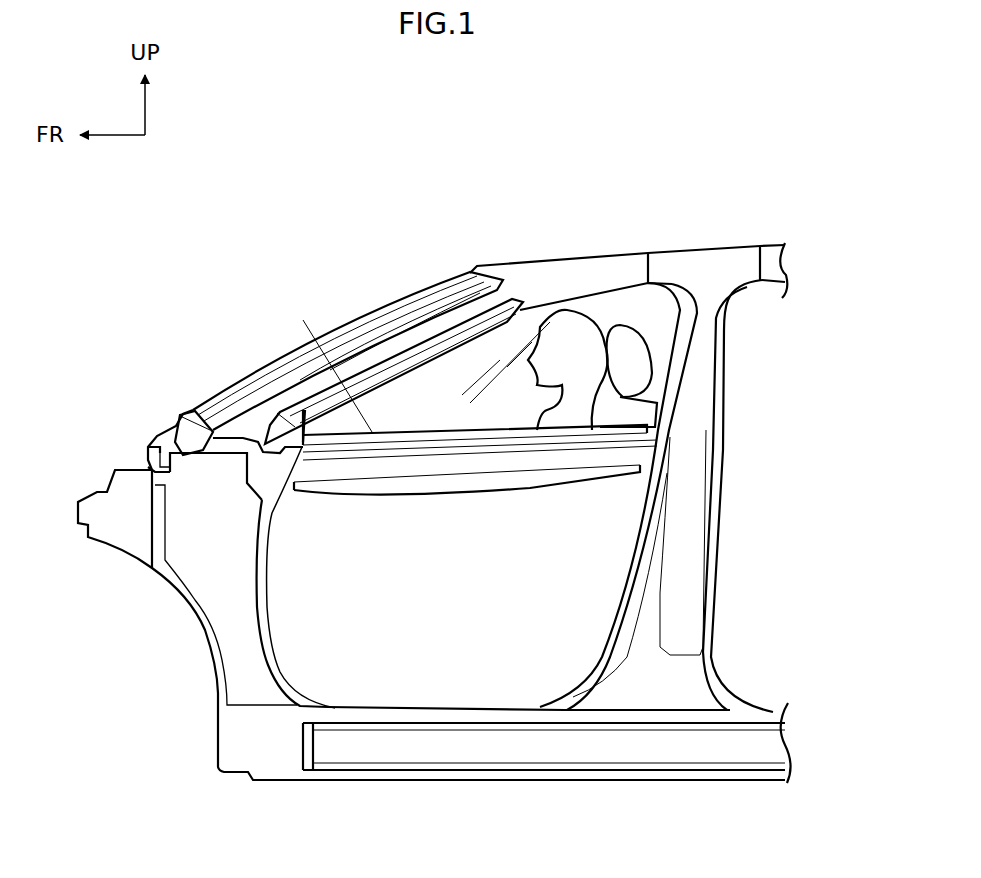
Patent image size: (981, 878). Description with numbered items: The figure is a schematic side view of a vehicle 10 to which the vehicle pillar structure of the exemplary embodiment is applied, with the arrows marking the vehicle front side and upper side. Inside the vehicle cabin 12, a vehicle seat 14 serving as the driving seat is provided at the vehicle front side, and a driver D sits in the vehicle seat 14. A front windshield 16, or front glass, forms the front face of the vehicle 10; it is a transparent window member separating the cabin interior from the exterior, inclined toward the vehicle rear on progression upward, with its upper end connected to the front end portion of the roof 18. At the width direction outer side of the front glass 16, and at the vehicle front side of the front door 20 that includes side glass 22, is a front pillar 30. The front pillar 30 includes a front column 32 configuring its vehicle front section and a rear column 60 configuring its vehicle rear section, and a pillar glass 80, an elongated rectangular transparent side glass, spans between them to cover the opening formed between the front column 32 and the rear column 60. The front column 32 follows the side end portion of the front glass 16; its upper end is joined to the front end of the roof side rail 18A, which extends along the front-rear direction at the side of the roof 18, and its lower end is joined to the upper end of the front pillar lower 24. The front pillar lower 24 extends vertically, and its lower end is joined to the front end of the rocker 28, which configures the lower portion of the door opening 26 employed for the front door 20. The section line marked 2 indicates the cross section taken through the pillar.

The vehicle 10 is at (397, 186).
The vehicle cabin 12 is at (465, 389).
The vehicle seat 14 is at (650, 357).
The front windshield 16 is at (398, 300).
The roof 18 is at (710, 240).
The roof side rail 18A is at (587, 268).
The front door 20 is at (495, 675).
The side glass 22 is at (445, 413).
The front pillar lower 24 is at (152, 432).
The door opening 26 is at (390, 690).
The rocker 28 is at (345, 747).
The front pillar 30 is at (177, 353).
The front column 32 is at (250, 385).
The rear column 60 is at (305, 418).
The pillar glass 80 is at (448, 296).
The section line II-II 2 is at (312, 318).
The driver D is at (545, 400).